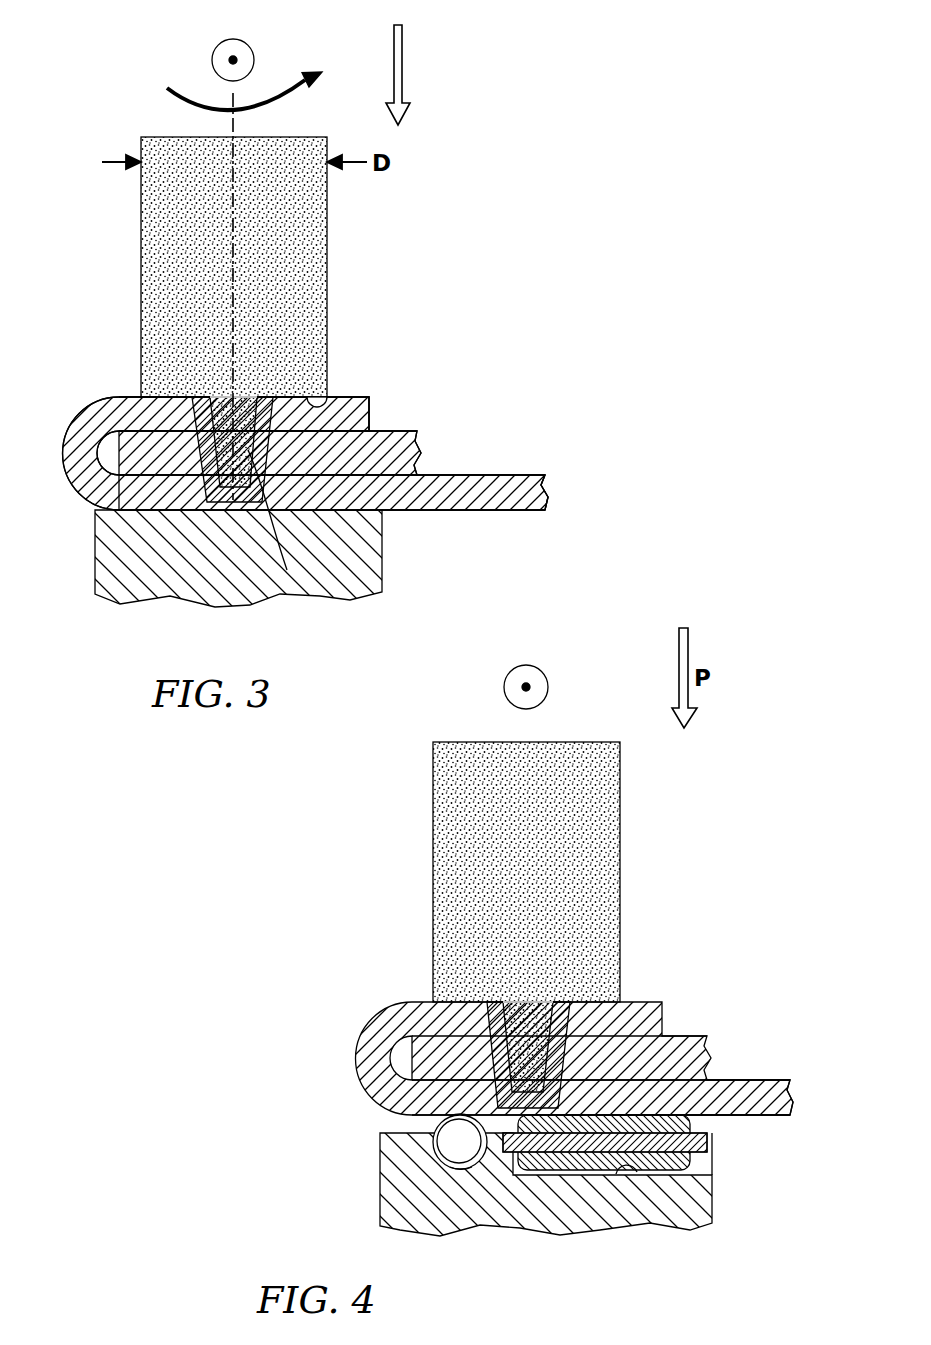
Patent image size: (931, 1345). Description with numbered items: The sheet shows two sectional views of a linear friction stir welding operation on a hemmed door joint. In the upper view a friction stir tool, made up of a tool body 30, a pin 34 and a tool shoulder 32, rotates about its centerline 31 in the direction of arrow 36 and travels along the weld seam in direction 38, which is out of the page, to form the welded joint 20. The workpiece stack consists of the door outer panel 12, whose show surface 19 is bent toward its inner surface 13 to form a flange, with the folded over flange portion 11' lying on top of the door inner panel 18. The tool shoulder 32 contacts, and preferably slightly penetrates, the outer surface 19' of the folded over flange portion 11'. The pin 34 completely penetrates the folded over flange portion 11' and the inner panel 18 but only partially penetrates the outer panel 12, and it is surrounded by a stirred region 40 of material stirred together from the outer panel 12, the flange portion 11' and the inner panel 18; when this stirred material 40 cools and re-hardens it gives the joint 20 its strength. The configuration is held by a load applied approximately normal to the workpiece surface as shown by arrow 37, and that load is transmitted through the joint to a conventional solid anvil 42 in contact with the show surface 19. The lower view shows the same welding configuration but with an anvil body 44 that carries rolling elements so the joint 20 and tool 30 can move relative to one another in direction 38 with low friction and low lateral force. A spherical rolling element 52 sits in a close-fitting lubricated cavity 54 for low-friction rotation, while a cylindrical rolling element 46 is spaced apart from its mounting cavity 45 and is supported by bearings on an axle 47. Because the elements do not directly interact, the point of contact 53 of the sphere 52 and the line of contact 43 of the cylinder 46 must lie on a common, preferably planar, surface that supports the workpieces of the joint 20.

In FIG. 3, the folded over flange portion 11' is at (201, 436).
In FIG. 3, the door outer panel 12 is at (550, 483).
In FIG. 3, the inner surface 13 is at (523, 495).
In FIG. 3, the door inner panel 18 is at (407, 455).
In FIG. 3, the show surface 19 is at (463, 543).
In FIG. 4, the show surface 19 is at (732, 1117).
In FIG. 3, the outer surface of folded over flange portion 19' is at (357, 354).
In FIG. 3, the welded joint 20 is at (372, 418).
In FIG. 4, the welded joint 20 is at (683, 1002).
In FIG. 3, the tool body 30 is at (328, 232).
In FIG. 4, the tool body 30 is at (620, 880).
In FIG. 3, the centerline 31 is at (238, 290).
In FIG. 3, the tool shoulder 32 is at (327, 400).
In FIG. 3, the pin 34 is at (287, 570).
In FIG. 3, the arrow indicating rotation direction 36 is at (212, 108).
In FIG. 3, the arrow indicating load P 37 is at (403, 48).
In FIG. 3, the direction of tool travel 38 is at (233, 60).
In FIG. 4, the direction of tool travel 38 is at (526, 687).
In FIG. 3, the stirred region 40 is at (205, 488).
In FIG. 4, the stirred region 40 is at (510, 1090).
In FIG. 3, the anvil 42 is at (143, 590).
In FIG. 4, the line of contact 43 is at (672, 1108).
In FIG. 4, the anvil body 44 is at (700, 1198).
In FIG. 4, the mounting cavity 45 is at (637, 1172).
In FIG. 4, the cylindrical rolling element 46 is at (697, 1157).
In FIG. 4, the axle 47 is at (703, 1122).
In FIG. 4, the spherical rolling element 52 is at (450, 1140).
In FIG. 4, the point of contact 53 is at (460, 1116).
In FIG. 4, the lubricated cavity 54 is at (462, 1168).